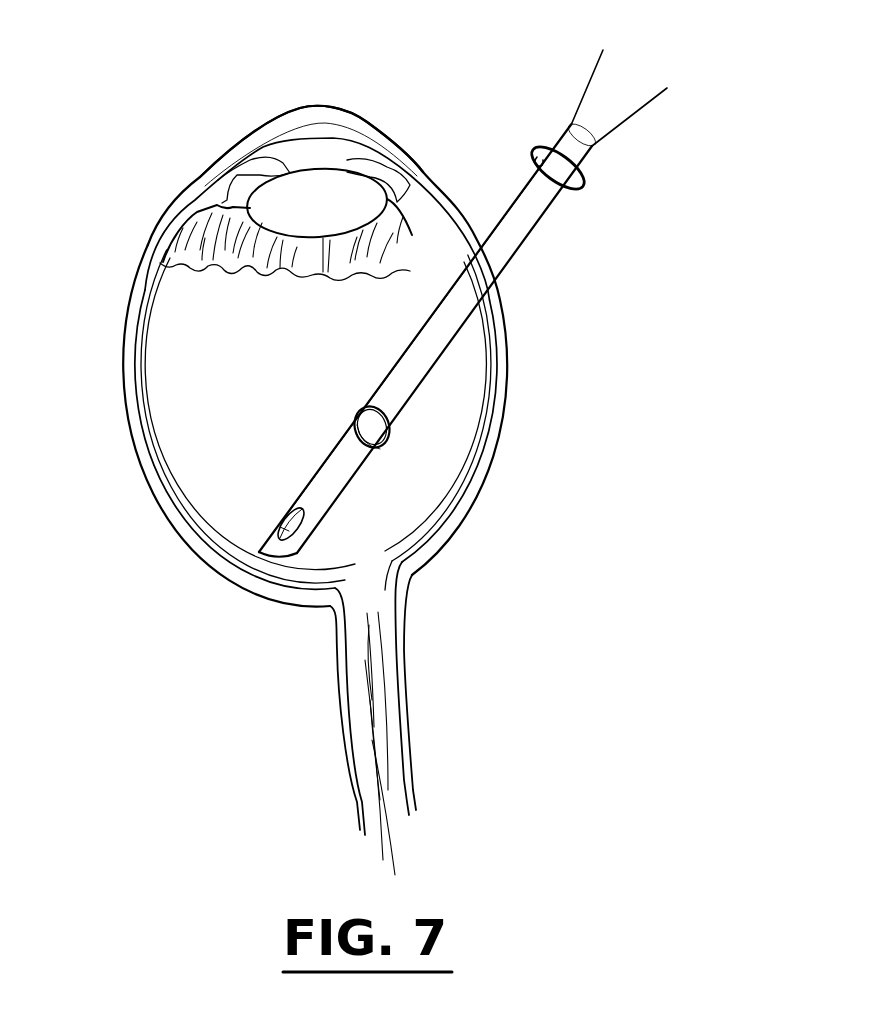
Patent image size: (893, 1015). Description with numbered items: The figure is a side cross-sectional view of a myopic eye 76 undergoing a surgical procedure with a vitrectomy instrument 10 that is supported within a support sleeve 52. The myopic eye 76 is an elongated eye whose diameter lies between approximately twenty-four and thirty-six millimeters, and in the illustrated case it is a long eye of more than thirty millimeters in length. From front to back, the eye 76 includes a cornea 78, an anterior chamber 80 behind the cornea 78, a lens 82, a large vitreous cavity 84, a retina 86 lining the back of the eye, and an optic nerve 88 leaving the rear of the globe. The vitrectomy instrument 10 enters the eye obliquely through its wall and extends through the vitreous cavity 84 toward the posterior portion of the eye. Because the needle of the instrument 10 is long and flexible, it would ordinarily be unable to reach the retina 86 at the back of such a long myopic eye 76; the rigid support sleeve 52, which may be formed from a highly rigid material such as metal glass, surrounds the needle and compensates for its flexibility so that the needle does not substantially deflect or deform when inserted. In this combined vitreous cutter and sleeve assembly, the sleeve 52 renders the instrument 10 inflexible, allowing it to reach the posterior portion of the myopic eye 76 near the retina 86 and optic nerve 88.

The vitrectomy instrument 10 is at (330, 485).
The support sleeve 52 is at (585, 174).
The myopic eye 76 is at (228, 633).
The cornea 78 is at (330, 115).
The anterior chamber 80 is at (357, 137).
The lens 82 is at (342, 203).
The vitreous cavity 84 is at (400, 485).
The retina 86 is at (208, 518).
The optic nerve 88 is at (370, 647).